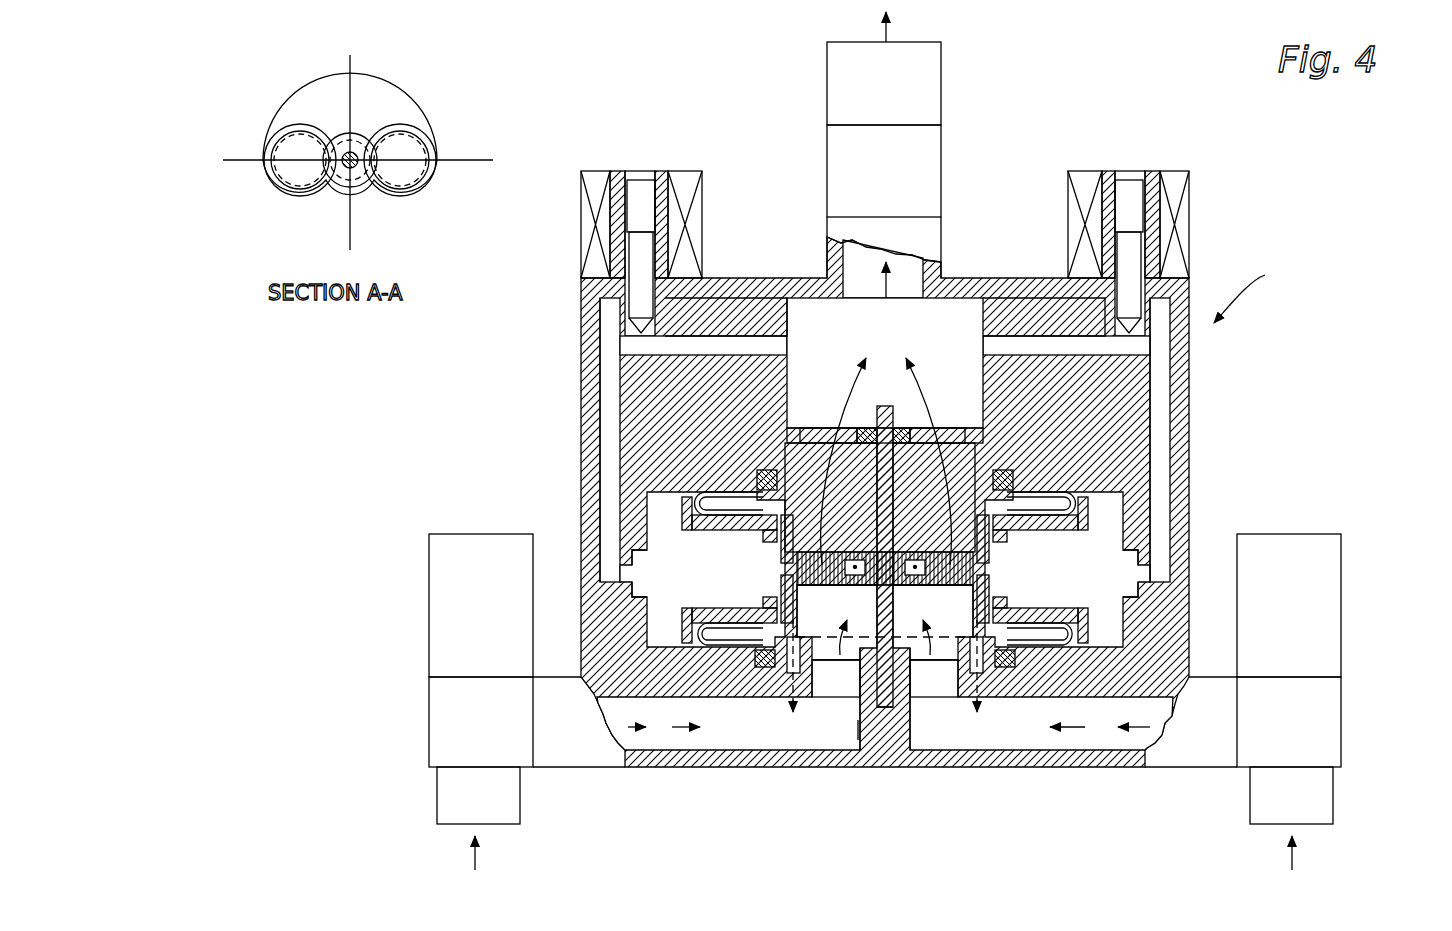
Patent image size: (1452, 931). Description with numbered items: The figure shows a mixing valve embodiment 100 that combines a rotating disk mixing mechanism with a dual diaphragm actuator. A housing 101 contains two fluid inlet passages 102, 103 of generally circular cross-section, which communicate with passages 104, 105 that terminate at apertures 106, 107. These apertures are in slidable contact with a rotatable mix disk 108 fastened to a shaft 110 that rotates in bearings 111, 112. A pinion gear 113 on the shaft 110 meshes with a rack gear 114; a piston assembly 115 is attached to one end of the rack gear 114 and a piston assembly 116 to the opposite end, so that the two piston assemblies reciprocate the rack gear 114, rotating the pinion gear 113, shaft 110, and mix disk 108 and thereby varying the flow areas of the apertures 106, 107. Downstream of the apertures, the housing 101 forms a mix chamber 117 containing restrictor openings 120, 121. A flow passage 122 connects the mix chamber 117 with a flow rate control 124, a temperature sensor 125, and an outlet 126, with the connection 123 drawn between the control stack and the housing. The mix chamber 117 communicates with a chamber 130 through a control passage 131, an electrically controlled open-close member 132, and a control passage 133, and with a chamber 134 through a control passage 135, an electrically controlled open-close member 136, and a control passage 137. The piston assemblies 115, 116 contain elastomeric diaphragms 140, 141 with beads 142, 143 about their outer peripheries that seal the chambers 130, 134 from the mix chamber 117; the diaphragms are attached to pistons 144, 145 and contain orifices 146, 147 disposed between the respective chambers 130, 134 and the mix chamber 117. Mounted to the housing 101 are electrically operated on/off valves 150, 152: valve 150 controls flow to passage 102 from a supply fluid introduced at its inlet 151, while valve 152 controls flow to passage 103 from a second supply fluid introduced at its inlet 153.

The embodiment of the invention 100 is at (1263, 290).
The housing 101 is at (1189, 455).
The fluid inlet passage 102 is at (757, 740).
The fluid inlet passage 103 is at (1087, 740).
The passage 104 is at (852, 695).
The passage 105 is at (950, 695).
The aperture 106 is at (793, 675).
The aperture 107 is at (946, 667).
The rotatable mix disk 108 is at (852, 660).
The shaft 110 is at (893, 488).
The bearing 111 is at (893, 446).
The bearing 112 is at (877, 697).
The pinion gear 113 is at (914, 560).
The rack gear 114 is at (840, 588).
The piston assembly 115 is at (755, 538).
The piston assembly 116 is at (1010, 534).
The mix chamber 117 is at (905, 333).
The restrictor opening 120 is at (828, 428).
The restrictor opening 121 is at (950, 428).
The flow passage 122 is at (903, 282).
The controller connection 123 is at (912, 212).
The flow rate control 124 is at (942, 166).
The temperature sensor 125 is at (942, 78).
The outlet 126 is at (848, 42).
The chamber 130 is at (712, 557).
The control passage 131 is at (718, 333).
The electrically controlled open-close member 132 is at (643, 248).
The control passage 133 is at (600, 348).
The chamber 134 is at (1057, 557).
The control passage 135 is at (1018, 345).
The electrically controlled open-close member 136 is at (1130, 250).
The control passage 137 is at (1160, 403).
The diaphragm 140 is at (688, 503).
The diaphragm 141 is at (1082, 503).
The bead 142 is at (770, 668).
The bead 143 is at (1003, 668).
The piston 144 is at (712, 570).
The piston 145 is at (1060, 612).
The orifice 146 is at (767, 573).
The orifice 147 is at (1000, 572).
The electrically operated on/off valve 150 is at (429, 710).
The inlet 151 is at (437, 795).
The electrically operated on/off valve 152 is at (1341, 700).
The inlet 153 is at (1250, 812).